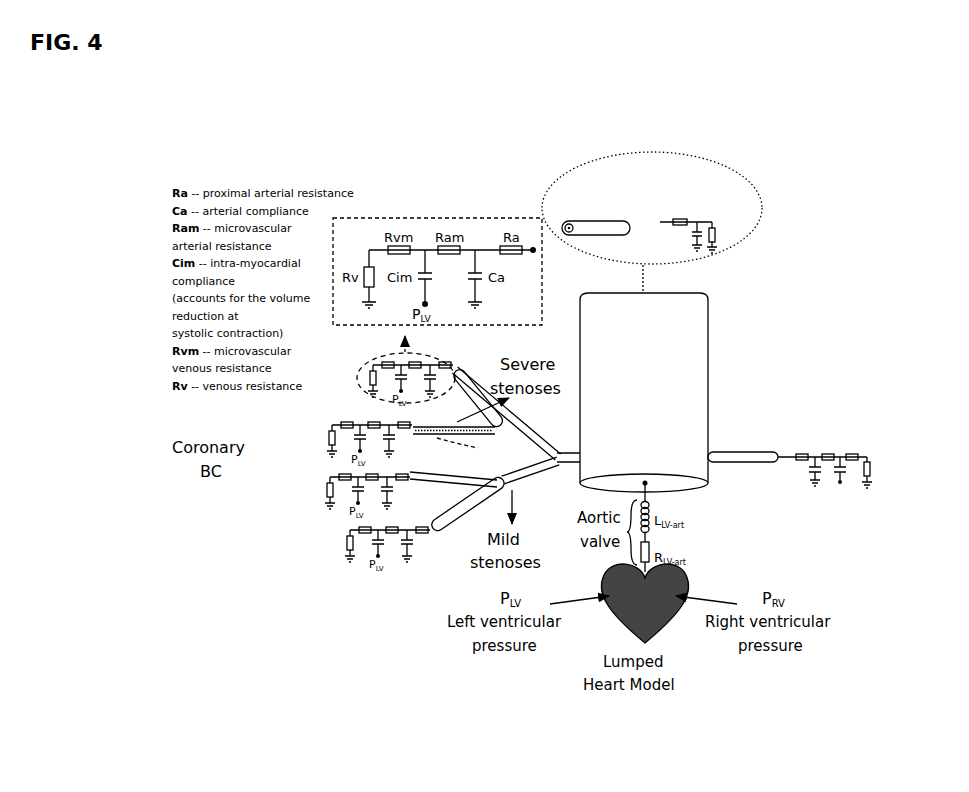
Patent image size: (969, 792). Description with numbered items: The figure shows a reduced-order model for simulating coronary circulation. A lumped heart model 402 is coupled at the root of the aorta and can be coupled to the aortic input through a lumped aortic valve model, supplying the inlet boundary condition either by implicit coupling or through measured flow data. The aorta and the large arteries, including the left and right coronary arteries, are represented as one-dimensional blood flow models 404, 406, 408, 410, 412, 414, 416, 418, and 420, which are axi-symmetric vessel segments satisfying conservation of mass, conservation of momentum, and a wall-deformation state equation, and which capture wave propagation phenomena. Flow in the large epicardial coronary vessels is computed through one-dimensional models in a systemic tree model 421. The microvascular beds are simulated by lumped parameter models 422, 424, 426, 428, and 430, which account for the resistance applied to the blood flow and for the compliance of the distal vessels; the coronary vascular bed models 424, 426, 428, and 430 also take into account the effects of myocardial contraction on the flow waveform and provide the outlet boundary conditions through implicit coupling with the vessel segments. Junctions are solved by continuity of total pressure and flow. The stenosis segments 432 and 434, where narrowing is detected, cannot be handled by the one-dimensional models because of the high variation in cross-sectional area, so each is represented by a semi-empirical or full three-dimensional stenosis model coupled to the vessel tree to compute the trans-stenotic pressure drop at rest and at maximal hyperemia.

The heart model 402 is at (678, 640).
The 1D blood flow model 404 is at (644, 392).
The 1D blood flow model 406 is at (762, 437).
The 1D blood flow model 408 is at (556, 455).
The 1D blood flow model 410 is at (520, 432).
The 1D blood flow model 412 is at (534, 470).
The 1D blood flow model 414 is at (462, 383).
The 1D blood flow model 416 is at (424, 428).
The 1D blood flow model 418 is at (440, 478).
The 1D blood flow model 420 is at (440, 528).
The systemic tree model 421 is at (680, 222).
The lumped parameter model 422 is at (835, 446).
The lumped parameter model 424 is at (356, 381).
The lumped parameter model 426 is at (312, 436).
The lumped parameter model 428 is at (310, 488).
The lumped parameter model 430 is at (330, 537).
The stenosis segment 432 is at (448, 439).
The stenosis segment 434 is at (514, 495).